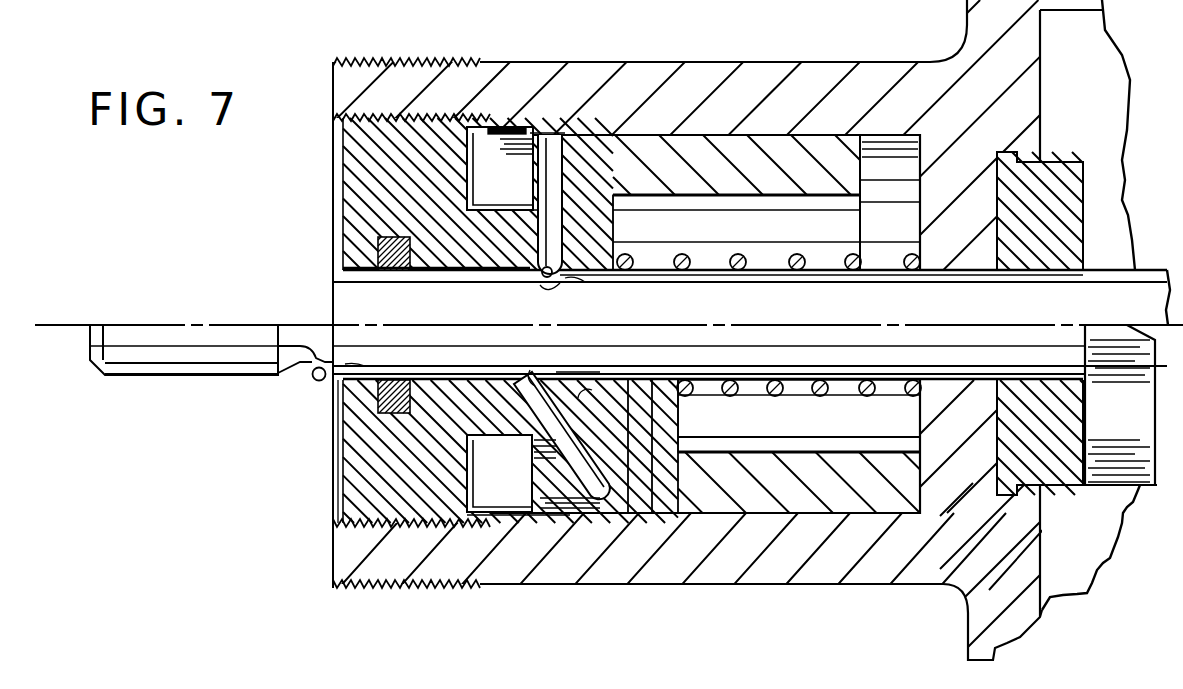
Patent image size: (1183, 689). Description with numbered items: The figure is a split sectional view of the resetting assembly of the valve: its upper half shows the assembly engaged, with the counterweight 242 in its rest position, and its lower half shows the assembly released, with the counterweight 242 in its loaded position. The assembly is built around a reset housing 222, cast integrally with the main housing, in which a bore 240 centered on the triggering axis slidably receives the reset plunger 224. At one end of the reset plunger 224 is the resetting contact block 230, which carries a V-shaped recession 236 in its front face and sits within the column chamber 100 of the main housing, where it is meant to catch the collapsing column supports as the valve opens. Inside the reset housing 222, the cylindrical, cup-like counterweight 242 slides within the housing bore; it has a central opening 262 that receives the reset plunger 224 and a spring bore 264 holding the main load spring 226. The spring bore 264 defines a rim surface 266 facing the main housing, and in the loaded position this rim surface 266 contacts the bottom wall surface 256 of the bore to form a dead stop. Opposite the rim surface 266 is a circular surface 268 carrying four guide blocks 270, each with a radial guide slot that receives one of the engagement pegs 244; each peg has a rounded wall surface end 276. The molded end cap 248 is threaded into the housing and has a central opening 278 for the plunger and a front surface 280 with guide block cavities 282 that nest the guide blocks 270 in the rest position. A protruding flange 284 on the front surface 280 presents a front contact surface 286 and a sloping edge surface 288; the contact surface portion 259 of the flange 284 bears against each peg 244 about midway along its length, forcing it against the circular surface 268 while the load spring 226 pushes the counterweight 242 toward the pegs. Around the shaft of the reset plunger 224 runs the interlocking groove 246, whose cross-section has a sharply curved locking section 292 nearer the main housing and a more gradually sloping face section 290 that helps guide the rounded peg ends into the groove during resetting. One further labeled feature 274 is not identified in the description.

The column chamber 100 is at (1106, 108).
The reset housing 222 is at (342, 78).
The reset plunger 224 is at (330, 290).
The main load spring 226 is at (797, 258).
The resetting contact block 230 is at (1143, 490).
The V shaped recession 236 is at (1148, 345).
The bore 240 is at (935, 275).
The counterweight 242 is at (745, 150).
The engagement pegs 244 is at (553, 133).
The interlocking groove 246 is at (535, 282).
The molded end cap 248 is at (360, 482).
The bottom wall surface 256 is at (918, 215).
The contact surface portion 259 is at (603, 240).
The opening 262 is at (650, 276).
The spring bore 264 is at (757, 233).
The rim surface 266 is at (878, 160).
The circular surface 268 is at (603, 158).
The guide blocks 270 is at (503, 148).
The retaining ring 274 is at (545, 285).
The wall surface end 276 is at (566, 136).
The central opening 278 is at (343, 272).
The front surface 280 is at (548, 505).
The guide block cavities 282 is at (467, 170).
The protruding flange 284 is at (507, 210).
The front contact surface 286 is at (578, 398).
The sloping edge surface 288 is at (603, 212).
The sloping face section 290 is at (520, 262).
The locking section 292 is at (585, 282).